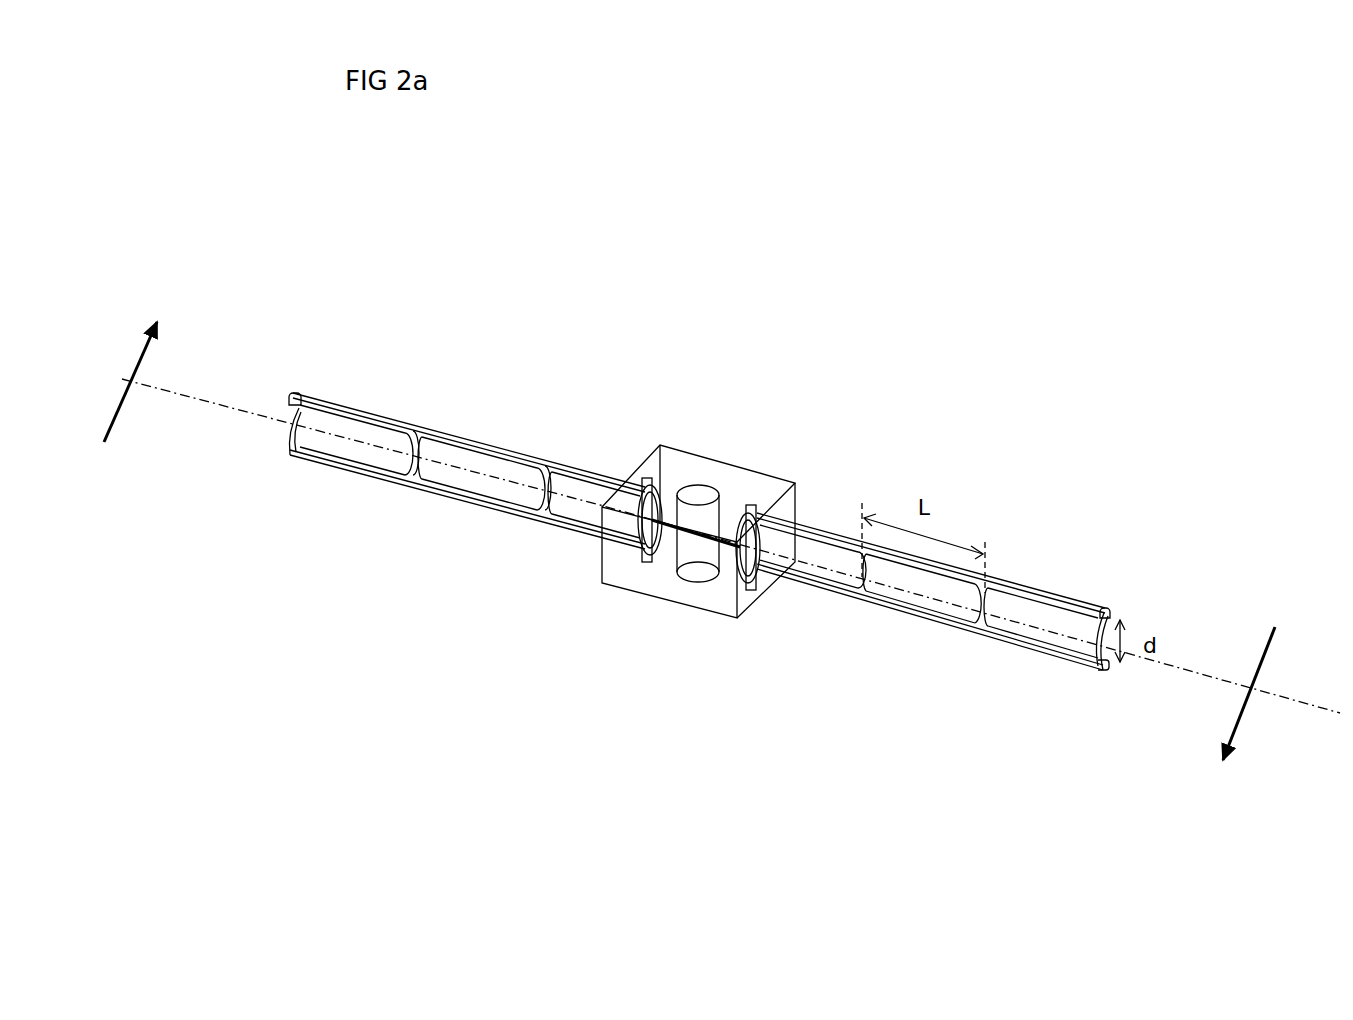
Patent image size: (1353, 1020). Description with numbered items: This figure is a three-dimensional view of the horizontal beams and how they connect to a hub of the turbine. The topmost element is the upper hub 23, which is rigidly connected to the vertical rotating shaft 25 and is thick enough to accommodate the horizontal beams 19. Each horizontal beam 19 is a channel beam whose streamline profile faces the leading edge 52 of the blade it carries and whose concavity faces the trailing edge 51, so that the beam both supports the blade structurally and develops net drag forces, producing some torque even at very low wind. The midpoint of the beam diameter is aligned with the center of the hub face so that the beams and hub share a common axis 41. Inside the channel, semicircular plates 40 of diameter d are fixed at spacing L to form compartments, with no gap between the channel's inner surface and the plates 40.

The horizontal beam 19 is at (398, 410).
The upper hub 23 is at (786, 470).
The vertical rotating shaft 25 is at (698, 484).
The semicircular plate 40 is at (420, 445).
The axis 41 is at (570, 513).
The trailing edge 51 is at (712, 546).
The leading edge 52 is at (689, 541).